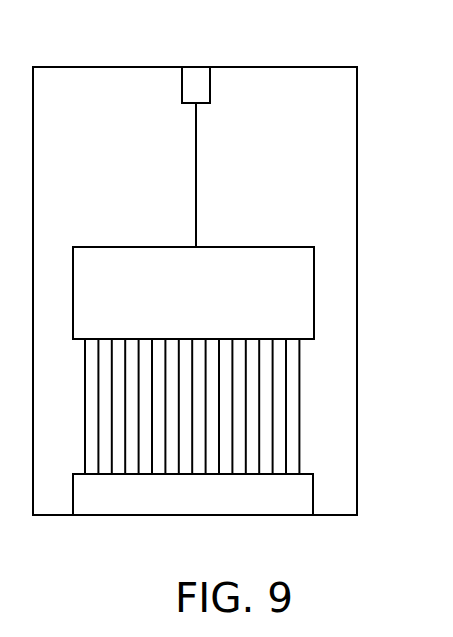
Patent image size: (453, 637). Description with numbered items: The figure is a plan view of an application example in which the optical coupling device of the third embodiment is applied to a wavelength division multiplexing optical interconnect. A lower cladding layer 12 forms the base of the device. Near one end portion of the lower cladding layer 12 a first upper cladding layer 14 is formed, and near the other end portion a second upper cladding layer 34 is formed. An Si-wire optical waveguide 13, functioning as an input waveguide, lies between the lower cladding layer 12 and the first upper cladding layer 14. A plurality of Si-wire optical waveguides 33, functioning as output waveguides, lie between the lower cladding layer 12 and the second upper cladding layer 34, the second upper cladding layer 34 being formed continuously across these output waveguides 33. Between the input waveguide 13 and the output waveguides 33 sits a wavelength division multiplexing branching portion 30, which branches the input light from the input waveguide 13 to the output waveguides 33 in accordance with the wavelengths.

The lower cladding layer 12 is at (357, 144).
The Si-wire optical waveguide 13 is at (197, 123).
The first upper cladding layer 14 is at (195, 62).
The wavelength division multiplexing branching portion 30 is at (314, 283).
The Si-wire optical waveguides 33 is at (300, 413).
The second upper cladding layer 34 is at (313, 498).